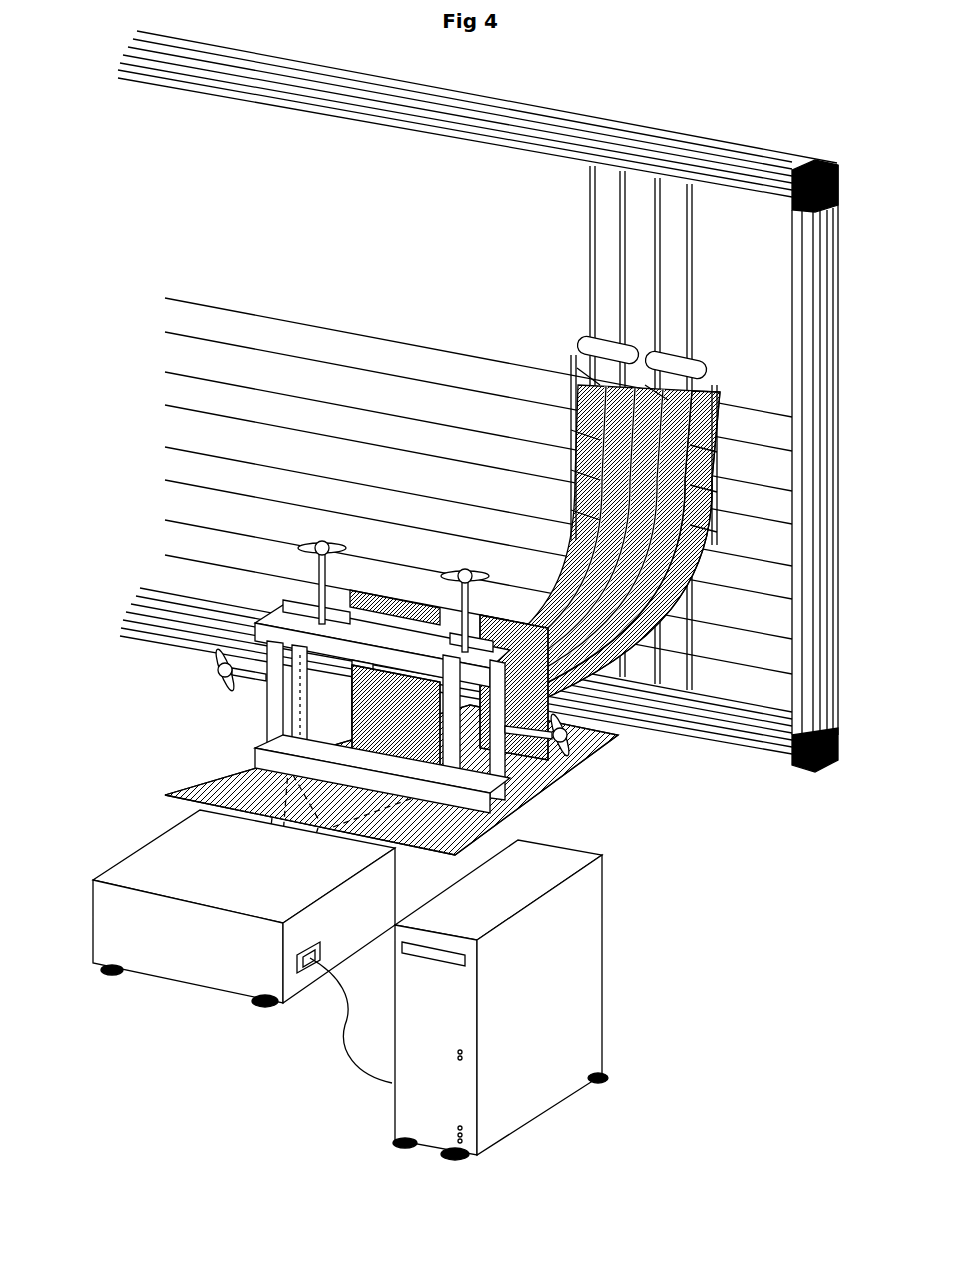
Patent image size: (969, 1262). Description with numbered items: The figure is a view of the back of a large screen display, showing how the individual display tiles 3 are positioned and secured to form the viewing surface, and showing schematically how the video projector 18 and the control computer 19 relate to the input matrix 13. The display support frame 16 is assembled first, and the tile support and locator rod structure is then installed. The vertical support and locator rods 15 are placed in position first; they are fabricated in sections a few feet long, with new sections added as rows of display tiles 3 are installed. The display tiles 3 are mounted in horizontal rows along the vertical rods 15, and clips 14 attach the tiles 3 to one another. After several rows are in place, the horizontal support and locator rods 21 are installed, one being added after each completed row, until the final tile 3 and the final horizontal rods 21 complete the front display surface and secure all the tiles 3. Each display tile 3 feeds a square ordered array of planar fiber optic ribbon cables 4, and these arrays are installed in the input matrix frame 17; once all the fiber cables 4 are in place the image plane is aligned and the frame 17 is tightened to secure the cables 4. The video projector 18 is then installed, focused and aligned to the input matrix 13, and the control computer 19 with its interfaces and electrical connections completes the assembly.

The display tile 3 is at (568, 355).
The planar fiber optic ribbon cable 4 is at (632, 690).
The input matrix 13 is at (505, 812).
The clip 14 is at (716, 512).
The vertical support and locator rod 15 is at (588, 222).
The display support frame 16 is at (320, 116).
The input matrix frame 17 is at (230, 730).
The video projector 18 is at (82, 930).
The control computer 19 is at (610, 1003).
The horizontal support and locator rod 21 is at (753, 675).